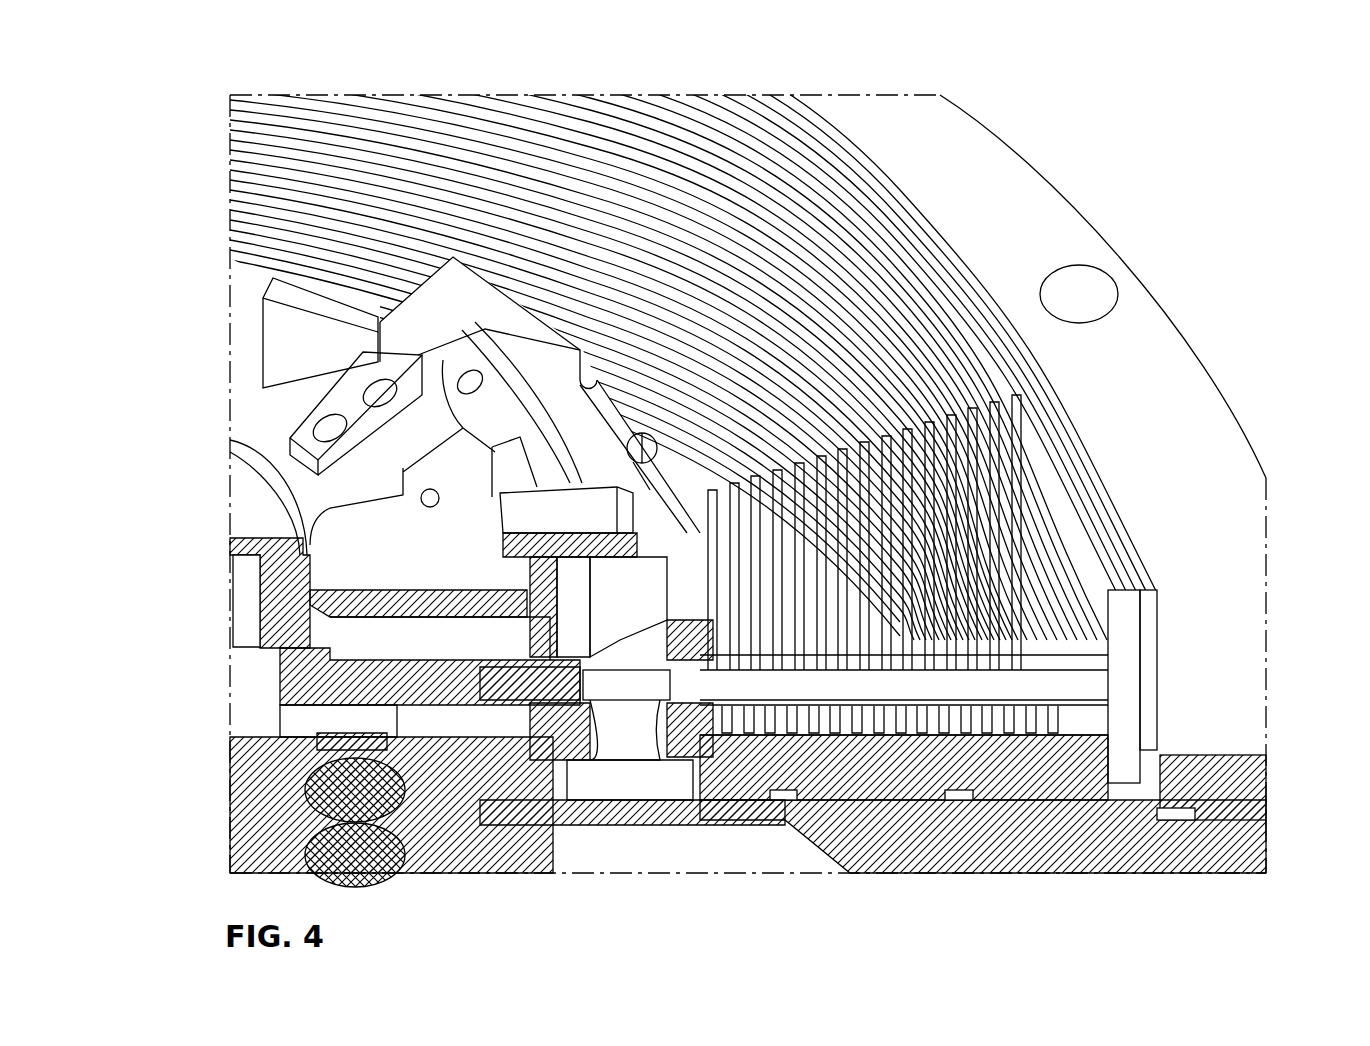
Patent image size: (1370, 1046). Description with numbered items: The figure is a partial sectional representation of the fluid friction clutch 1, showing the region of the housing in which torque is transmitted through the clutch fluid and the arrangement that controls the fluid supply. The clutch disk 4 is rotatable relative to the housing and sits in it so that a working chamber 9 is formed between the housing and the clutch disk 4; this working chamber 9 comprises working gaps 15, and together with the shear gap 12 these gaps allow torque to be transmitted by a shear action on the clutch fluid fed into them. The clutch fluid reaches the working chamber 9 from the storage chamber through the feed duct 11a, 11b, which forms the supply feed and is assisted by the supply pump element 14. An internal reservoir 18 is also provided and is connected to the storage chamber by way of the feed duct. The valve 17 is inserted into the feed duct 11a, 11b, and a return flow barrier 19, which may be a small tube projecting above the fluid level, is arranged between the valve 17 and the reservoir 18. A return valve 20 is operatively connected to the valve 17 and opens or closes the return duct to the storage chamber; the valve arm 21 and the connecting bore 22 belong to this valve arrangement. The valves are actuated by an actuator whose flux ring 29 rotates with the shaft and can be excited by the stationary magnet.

The fluid friction clutch 1 is at (1226, 153).
The clutch disk 4 is at (1043, 383).
The working chamber 9 is at (822, 290).
The feed duct 11a is at (993, 690).
The feed duct 11b is at (745, 600).
The shear gap 12 is at (1170, 650).
The supply pump element 14 is at (1130, 617).
The working gaps 15 is at (1043, 460).
The valve 17 is at (697, 653).
The internal reservoir 18 is at (613, 740).
The return flow barrier 19 is at (613, 683).
The return valve 20 is at (347, 317).
The valve arm 21 is at (430, 327).
The connecting bore 22 is at (463, 382).
The flux ring 29 is at (547, 620).